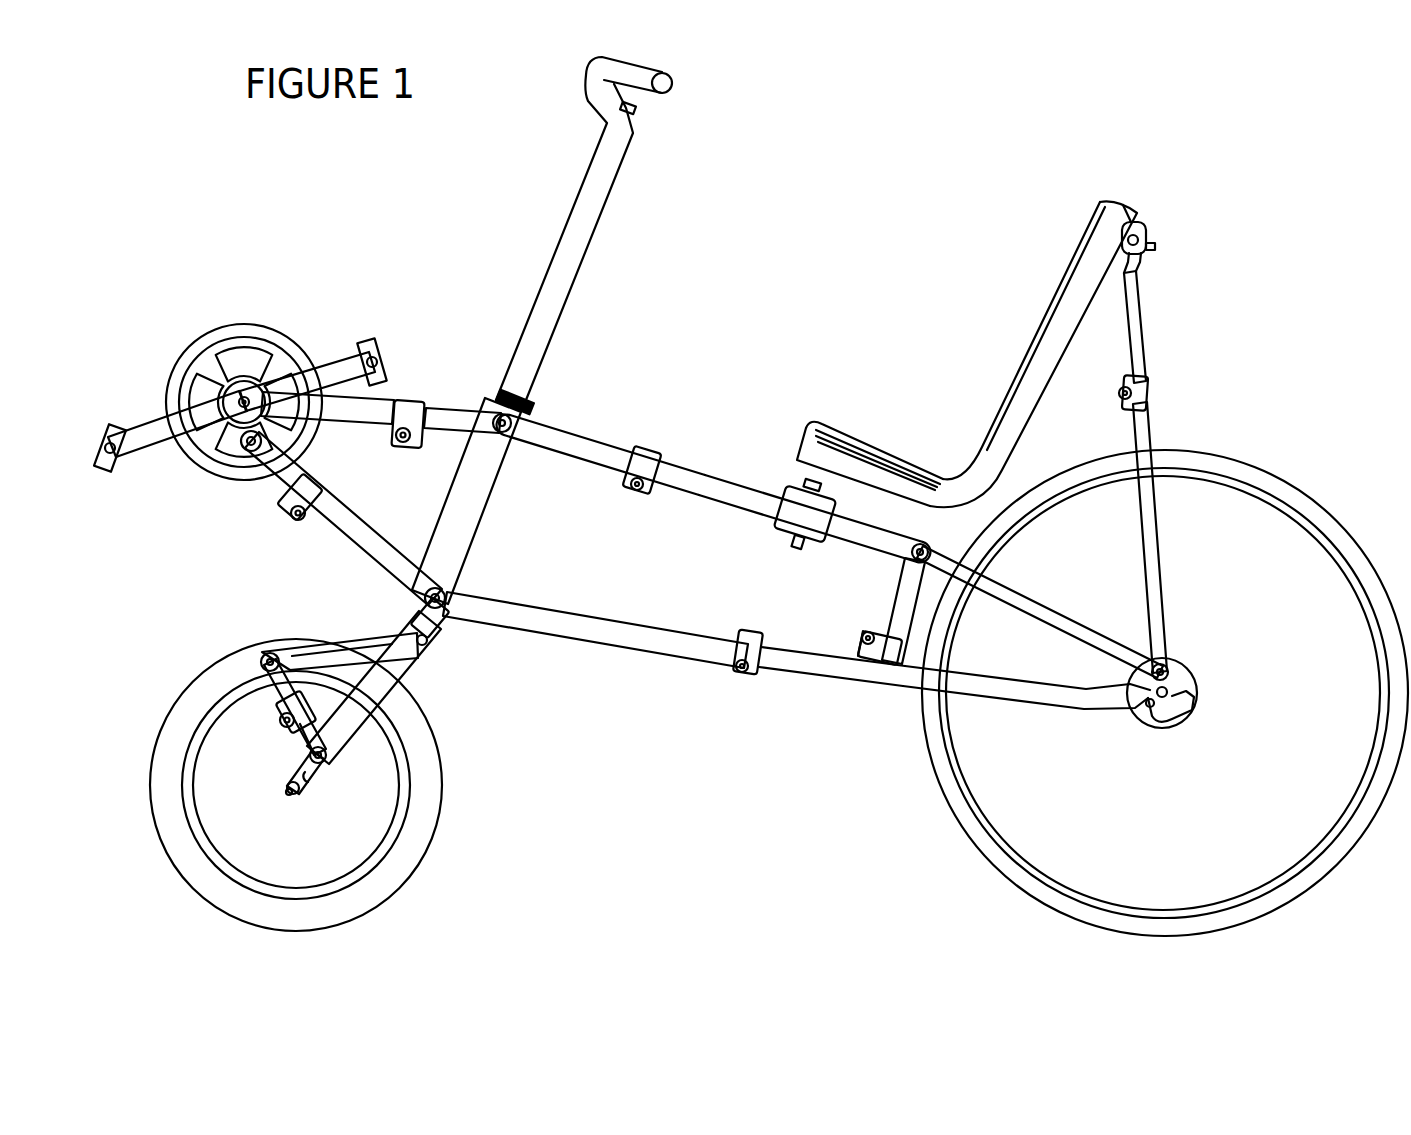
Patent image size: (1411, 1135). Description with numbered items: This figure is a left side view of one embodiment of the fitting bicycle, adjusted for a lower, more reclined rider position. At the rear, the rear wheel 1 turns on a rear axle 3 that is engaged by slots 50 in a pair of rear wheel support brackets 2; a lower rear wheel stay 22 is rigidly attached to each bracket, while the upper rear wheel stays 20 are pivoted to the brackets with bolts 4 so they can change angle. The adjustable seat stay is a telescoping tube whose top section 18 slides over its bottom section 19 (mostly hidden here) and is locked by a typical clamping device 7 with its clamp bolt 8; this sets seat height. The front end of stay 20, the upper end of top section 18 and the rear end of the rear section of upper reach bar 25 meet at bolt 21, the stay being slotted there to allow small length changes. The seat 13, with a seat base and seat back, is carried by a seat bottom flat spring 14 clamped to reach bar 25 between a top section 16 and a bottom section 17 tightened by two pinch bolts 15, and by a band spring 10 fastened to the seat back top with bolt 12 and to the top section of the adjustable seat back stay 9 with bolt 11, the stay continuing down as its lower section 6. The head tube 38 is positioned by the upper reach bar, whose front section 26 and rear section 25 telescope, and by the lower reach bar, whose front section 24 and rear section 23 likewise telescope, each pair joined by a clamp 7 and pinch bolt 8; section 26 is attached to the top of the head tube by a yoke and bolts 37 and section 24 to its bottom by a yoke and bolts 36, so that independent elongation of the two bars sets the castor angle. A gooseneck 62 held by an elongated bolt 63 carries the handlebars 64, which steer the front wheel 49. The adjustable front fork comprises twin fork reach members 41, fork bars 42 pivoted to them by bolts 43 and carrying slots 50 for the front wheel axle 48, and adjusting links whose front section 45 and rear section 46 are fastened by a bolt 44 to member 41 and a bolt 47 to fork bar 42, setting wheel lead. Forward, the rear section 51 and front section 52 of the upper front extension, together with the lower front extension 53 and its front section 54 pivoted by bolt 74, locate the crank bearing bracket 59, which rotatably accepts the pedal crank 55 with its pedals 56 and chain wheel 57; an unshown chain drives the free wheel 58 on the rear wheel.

The rear wheel 1 is at (1279, 492).
The rear wheel support brackets 2 is at (1129, 710).
The rear axle 3 is at (1172, 692).
The bolts 4 is at (1168, 673).
The adjustable seat back stay 6 is at (1142, 440).
The clamping device 7 is at (412, 400).
The clamp bolt 8 is at (413, 440).
The top section of adjustable seat back stay 9 is at (1133, 307).
The band spring 10 is at (1142, 223).
The bolt 11 is at (1152, 247).
The bolt 12 is at (1131, 222).
The seat 13 is at (1082, 297).
The seat bottom flat spring 14 is at (853, 500).
The pinch bolts 15 is at (792, 540).
The top section of clamping device 16 is at (793, 500).
The bottom section of clamping device 17 is at (777, 518).
The top section of adjustable seat stay 18 is at (905, 597).
The bottom section of adjustable seat stay 19 is at (867, 650).
The upper rear wheel stays 20 is at (1026, 603).
The bolt 21 is at (928, 548).
The lower rear wheel stay 22 is at (912, 680).
The rear section of lower reach bar 23 is at (823, 660).
The front section of lower reach bar 24 is at (587, 622).
The rear section of upper reach bar 25 is at (700, 477).
The front section of upper reach bar 26 is at (585, 443).
The bolts 36 is at (462, 587).
The bolts 37 is at (530, 392).
The head tube 38 is at (485, 495).
The fork reach members 41 is at (342, 650).
The fork bars 42 is at (380, 683).
The bolts 43 is at (463, 641).
The bolt 44 is at (265, 653).
The front section of front fork adjusting link 45 is at (287, 705).
The rear section of front fork adjusting link 46 is at (303, 737).
The bolt 47 is at (327, 758).
The front wheel axle 48 is at (303, 788).
The front wheel 49 is at (390, 880).
The slots 50 is at (1151, 719).
The rear section of adjustable upper front extension 51 is at (453, 413).
The front section of adjustable upper front extension 52 is at (337, 413).
The lower front extension 53 is at (380, 547).
The front section of lower front extension link 54 is at (277, 477).
The pedal crank 55 is at (148, 428).
The pedals 56 is at (371, 343).
The chain wheel 57 is at (258, 330).
The free wheel 58 is at (1188, 719).
The crank bearing bracket 59 is at (218, 372).
The gooseneck 62 is at (567, 268).
The bolt 63 is at (637, 115).
The handlebars 64 is at (655, 73).
The bolt 74 is at (238, 447).